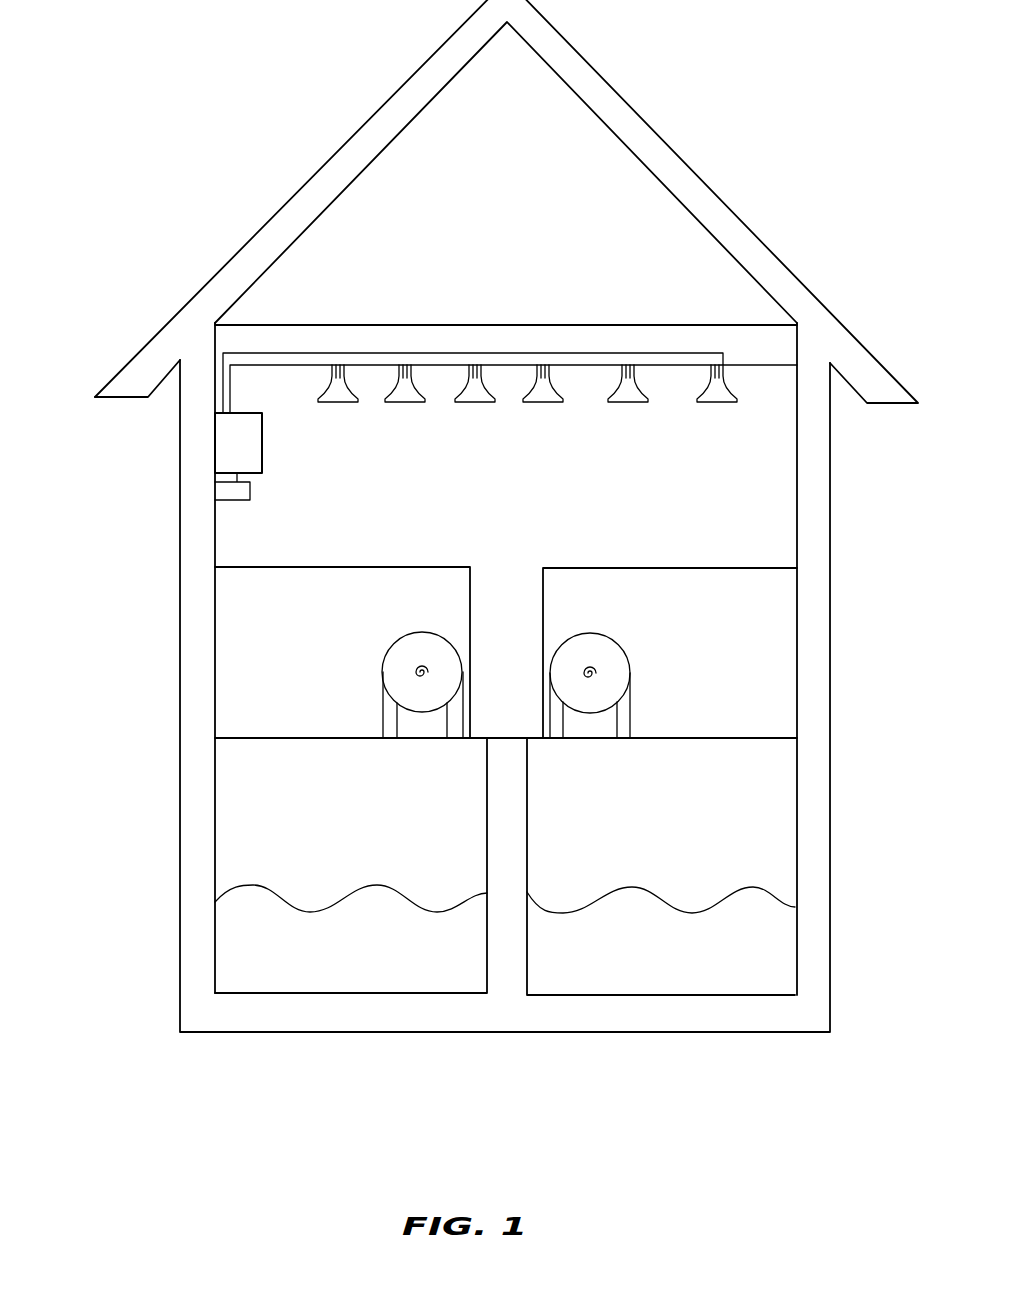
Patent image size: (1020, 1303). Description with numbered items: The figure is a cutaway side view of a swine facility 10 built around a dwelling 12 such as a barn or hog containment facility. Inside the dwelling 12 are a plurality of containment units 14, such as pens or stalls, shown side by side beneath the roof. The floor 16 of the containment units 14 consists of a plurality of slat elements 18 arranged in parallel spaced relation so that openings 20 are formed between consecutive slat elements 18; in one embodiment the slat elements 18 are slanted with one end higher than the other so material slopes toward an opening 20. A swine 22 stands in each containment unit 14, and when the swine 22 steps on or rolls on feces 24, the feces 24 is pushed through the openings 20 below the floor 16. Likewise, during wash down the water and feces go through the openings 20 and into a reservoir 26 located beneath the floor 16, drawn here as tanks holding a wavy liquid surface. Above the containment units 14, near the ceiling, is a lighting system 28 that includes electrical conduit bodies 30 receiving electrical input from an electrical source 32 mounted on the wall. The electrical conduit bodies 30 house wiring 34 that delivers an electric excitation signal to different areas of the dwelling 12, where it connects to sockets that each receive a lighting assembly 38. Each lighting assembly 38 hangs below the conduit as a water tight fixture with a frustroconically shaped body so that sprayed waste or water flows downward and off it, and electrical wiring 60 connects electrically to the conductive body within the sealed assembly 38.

The swine facility 10 is at (105, 585).
The dwelling 12 is at (280, 108).
The containment units 14 is at (227, 582).
The floor 16 is at (502, 730).
The slat elements 18 is at (288, 738).
The openings 20 is at (280, 735).
The swine 22 is at (418, 647).
The feces 24 is at (273, 920).
The reservoir 26 is at (247, 781).
The lighting system 28 is at (432, 289).
The electrical conduit bodies 30 is at (317, 343).
The electrical source 32 is at (224, 457).
The wiring 34 is at (338, 353).
The lighting assembly 38 is at (288, 387).
The electrical wiring 60 is at (640, 377).